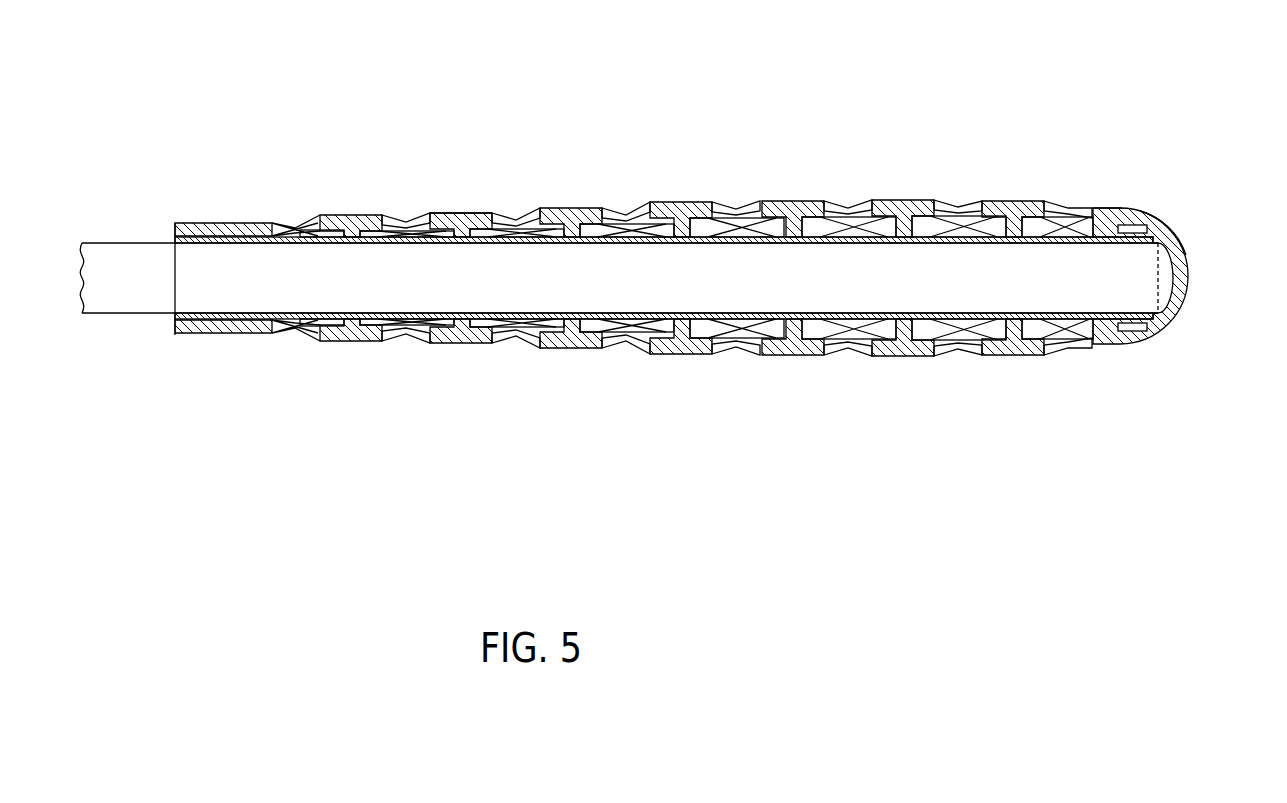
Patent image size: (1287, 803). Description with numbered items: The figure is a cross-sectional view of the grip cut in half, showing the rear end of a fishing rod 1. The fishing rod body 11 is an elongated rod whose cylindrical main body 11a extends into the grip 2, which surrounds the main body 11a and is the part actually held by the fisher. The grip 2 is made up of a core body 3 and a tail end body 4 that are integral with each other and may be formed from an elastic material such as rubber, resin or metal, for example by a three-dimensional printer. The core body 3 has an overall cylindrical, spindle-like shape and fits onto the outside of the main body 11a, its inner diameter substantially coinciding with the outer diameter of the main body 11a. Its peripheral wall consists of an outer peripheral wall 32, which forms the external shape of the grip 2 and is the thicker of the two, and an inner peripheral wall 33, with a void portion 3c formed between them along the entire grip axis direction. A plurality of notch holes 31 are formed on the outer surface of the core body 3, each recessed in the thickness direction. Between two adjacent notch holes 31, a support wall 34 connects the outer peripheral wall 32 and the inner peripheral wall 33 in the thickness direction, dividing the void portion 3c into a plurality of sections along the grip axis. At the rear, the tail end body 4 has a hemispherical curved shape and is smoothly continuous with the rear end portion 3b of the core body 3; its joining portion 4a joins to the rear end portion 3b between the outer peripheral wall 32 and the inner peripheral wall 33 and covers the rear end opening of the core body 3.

The fishing rod 1 is at (1026, 128).
The grip 2 is at (680, 193).
The core body 3 is at (895, 201).
The rear end portion of the core body 3b is at (1136, 205).
The void portion 3c is at (704, 229).
The tail end body 4 is at (1188, 273).
The joining portion 4a is at (1165, 215).
The fishing rod body 11 is at (130, 243).
The main body 11a is at (188, 222).
The notch holes 31 is at (390, 222).
The outer peripheral wall 32 is at (463, 212).
The inner peripheral wall 33 is at (420, 222).
The support wall 34 is at (612, 221).